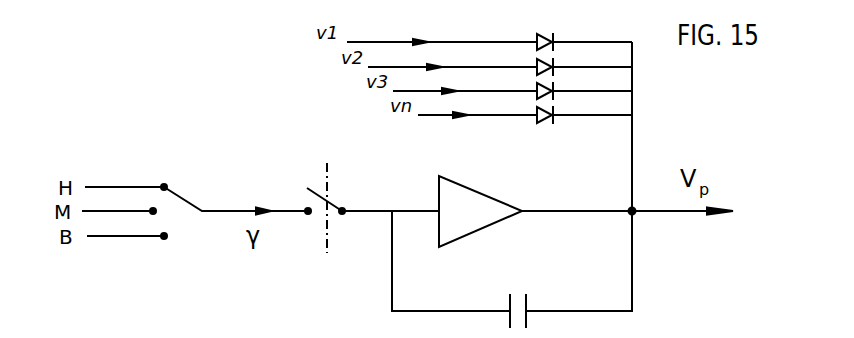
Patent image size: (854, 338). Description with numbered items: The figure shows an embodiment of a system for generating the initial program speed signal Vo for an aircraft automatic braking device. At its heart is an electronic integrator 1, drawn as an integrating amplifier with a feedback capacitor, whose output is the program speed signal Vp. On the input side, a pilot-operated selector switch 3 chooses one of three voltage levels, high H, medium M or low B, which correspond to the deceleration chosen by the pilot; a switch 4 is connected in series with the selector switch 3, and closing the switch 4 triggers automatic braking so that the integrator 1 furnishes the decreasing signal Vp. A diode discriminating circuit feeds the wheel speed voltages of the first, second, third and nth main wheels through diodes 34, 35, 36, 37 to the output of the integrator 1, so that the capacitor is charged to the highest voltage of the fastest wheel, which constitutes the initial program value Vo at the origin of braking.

The electronic integrator 1 is at (480, 211).
The selector switch 3 is at (188, 199).
The switch 4 is at (333, 203).
The diode 34 is at (536, 39).
The diode 35 is at (536, 64).
The diode 36 is at (536, 88).
The diode 37 is at (536, 112).